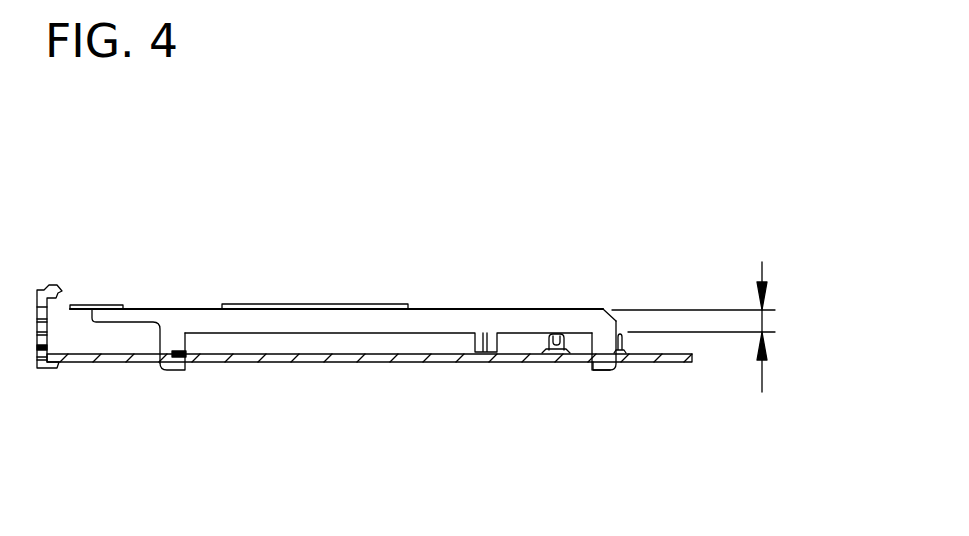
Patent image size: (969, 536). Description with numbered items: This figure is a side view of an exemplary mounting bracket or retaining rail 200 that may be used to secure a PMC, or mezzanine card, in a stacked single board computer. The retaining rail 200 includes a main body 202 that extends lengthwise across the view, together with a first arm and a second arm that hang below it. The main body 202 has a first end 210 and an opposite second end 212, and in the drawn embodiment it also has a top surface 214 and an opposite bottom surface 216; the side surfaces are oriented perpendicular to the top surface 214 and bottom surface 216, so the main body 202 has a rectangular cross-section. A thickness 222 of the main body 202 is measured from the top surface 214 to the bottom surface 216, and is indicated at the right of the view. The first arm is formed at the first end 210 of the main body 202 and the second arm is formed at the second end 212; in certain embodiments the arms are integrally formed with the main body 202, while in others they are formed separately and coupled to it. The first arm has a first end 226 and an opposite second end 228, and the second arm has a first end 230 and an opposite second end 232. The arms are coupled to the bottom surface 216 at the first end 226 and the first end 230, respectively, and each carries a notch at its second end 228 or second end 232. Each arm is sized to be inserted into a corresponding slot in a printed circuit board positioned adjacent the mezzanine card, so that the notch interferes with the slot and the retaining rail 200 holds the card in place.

The retaining rail 200 is at (472, 214).
The main body 202 is at (355, 318).
The first end 210 is at (595, 286).
The second end 212 is at (105, 286).
The top surface 214 is at (173, 308).
The bottom surface 216 is at (260, 333).
The thickness 222 is at (762, 318).
The first end 226 is at (615, 318).
The second end 228 is at (598, 372).
The first end 230 is at (170, 340).
The second end 232 is at (176, 370).